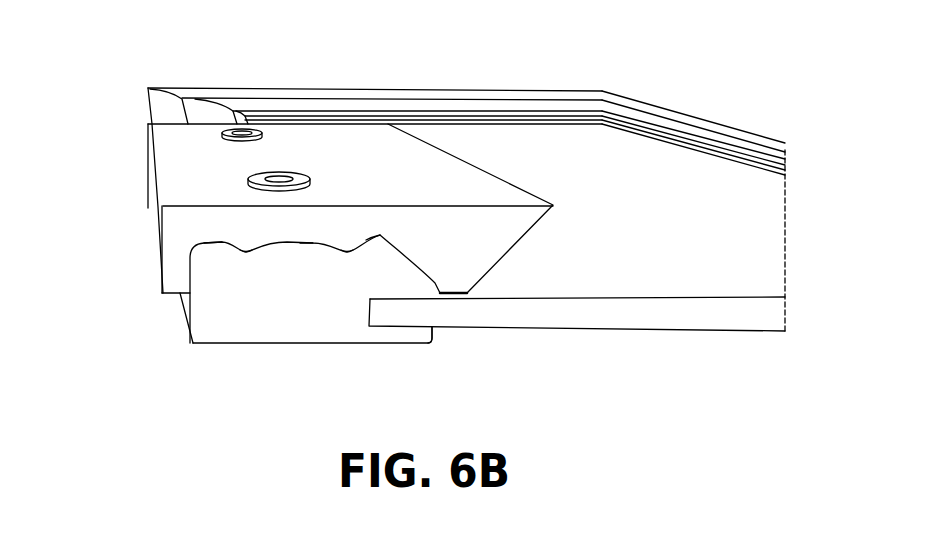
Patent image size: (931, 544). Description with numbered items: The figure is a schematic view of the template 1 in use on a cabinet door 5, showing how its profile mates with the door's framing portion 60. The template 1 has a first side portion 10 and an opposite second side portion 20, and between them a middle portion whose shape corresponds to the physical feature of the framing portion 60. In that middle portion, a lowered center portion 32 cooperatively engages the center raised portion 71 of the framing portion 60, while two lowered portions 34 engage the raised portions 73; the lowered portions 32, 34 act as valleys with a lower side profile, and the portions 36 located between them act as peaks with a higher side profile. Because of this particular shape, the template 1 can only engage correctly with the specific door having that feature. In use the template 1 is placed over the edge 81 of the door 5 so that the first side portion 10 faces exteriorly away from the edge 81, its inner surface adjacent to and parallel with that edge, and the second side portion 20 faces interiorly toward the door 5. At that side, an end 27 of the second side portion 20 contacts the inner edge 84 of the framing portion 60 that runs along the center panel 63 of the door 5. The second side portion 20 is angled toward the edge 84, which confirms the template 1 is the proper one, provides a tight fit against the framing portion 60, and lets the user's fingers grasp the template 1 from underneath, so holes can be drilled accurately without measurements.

The template 1 is at (355, 110).
The door 5 is at (692, 128).
The first side portion 10 is at (151, 201).
The second side portion 20 is at (540, 222).
The end of the second side portion 27 is at (450, 296).
The lowered center portion 32 is at (295, 235).
The lowered portions 34 is at (208, 236).
The portions between the lowered portions 36 is at (246, 251).
The framing portion 60 is at (254, 315).
The center panel 63 is at (632, 275).
The center raised portion 71 is at (307, 252).
The raised portions 73 is at (212, 247).
The edge of the door 81 is at (183, 312).
The edge of the framing portion 84 is at (435, 333).